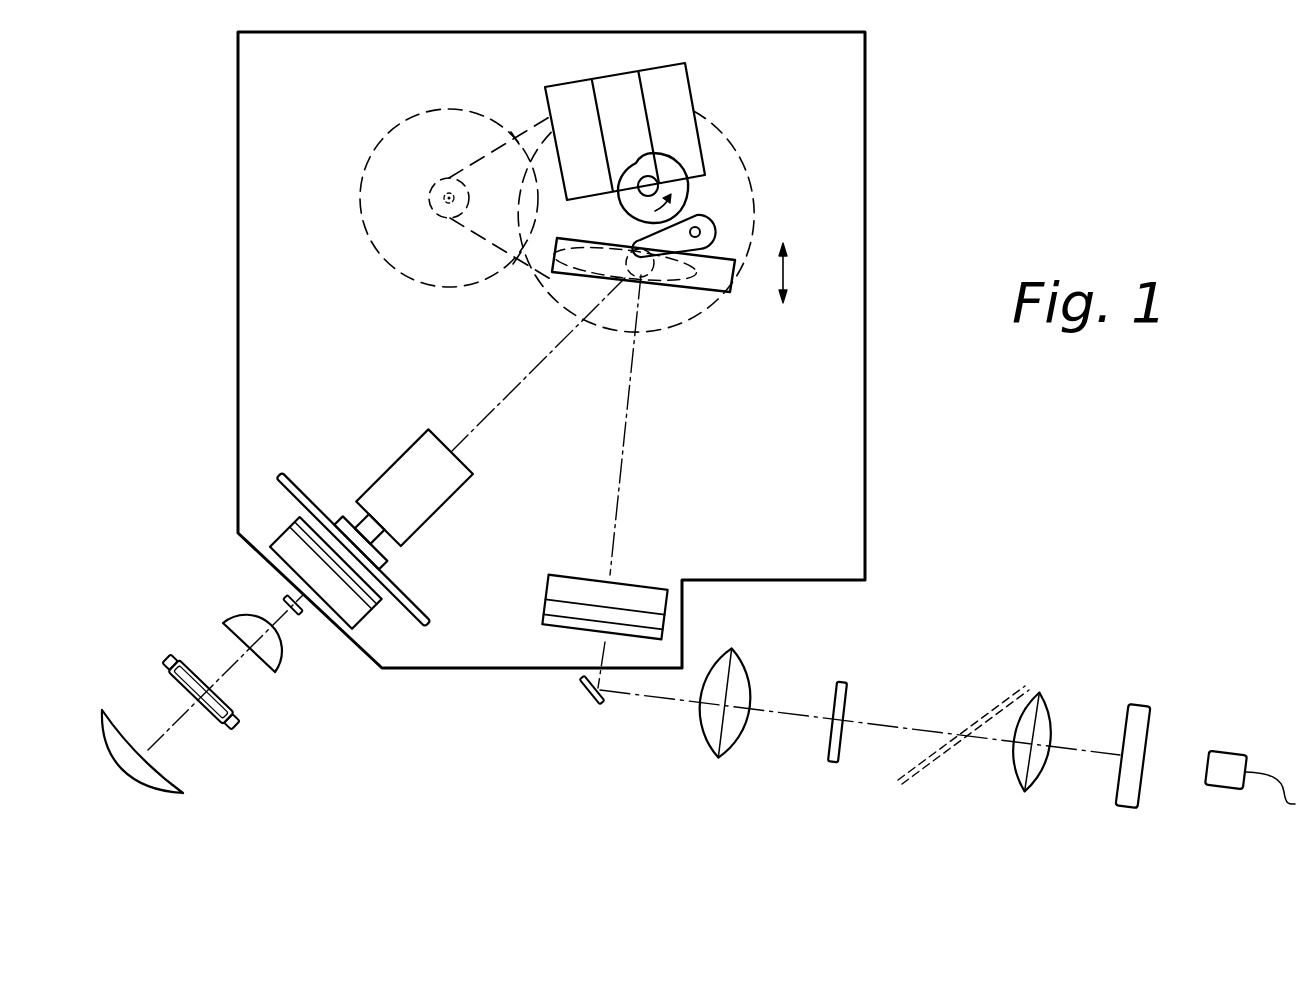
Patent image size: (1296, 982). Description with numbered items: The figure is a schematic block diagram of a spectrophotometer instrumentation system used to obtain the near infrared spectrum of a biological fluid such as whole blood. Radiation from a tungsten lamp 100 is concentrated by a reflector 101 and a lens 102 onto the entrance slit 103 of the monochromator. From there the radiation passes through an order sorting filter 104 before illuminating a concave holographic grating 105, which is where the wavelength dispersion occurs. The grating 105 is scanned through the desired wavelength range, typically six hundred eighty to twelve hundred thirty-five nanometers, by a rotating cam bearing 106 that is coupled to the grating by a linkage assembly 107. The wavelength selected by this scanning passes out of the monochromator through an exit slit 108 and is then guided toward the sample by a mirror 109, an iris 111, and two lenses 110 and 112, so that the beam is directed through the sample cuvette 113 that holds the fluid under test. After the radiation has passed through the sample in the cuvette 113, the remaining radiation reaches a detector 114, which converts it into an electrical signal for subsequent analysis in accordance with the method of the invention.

The tungsten lamp 100 is at (237, 728).
The reflector 101 is at (178, 797).
The lens 102 is at (280, 660).
The entrance slit 103 is at (283, 602).
The order sorting filter 104 is at (417, 627).
The concave holographic grating 105 is at (710, 298).
The rotating cam bearing 106 is at (688, 190).
The linkage assembly 107 is at (707, 227).
The exit slit 108 is at (568, 632).
The mirror 109 is at (590, 700).
The lens 110 is at (712, 753).
The iris 111 is at (835, 762).
The lens 112 is at (1022, 783).
The sample cuvette 113 is at (1140, 797).
The detector 114 is at (1225, 788).